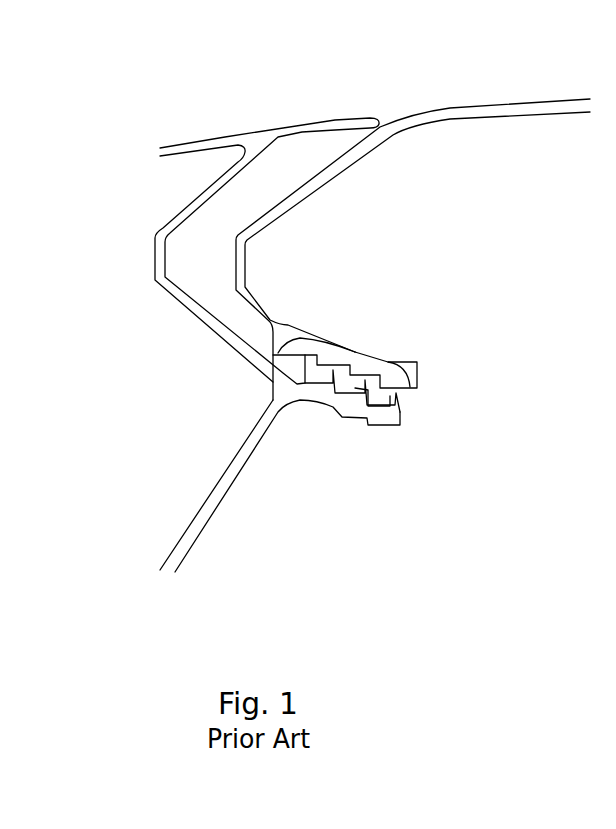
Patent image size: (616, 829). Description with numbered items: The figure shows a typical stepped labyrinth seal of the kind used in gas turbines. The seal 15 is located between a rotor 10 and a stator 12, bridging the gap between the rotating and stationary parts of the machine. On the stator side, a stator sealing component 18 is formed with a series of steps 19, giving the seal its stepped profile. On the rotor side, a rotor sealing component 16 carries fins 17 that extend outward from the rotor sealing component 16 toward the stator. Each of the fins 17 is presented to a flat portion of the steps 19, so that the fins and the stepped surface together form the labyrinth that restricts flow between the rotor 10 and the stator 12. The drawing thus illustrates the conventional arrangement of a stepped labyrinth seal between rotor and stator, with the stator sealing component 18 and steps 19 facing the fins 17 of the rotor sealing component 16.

The rotor 10 is at (177, 298).
The stator 12 is at (332, 183).
The seal 15 is at (377, 442).
The rotor sealing component 16 is at (337, 405).
The fins 17 is at (367, 390).
The stator sealing component 18 is at (297, 322).
The steps 19 is at (352, 372).